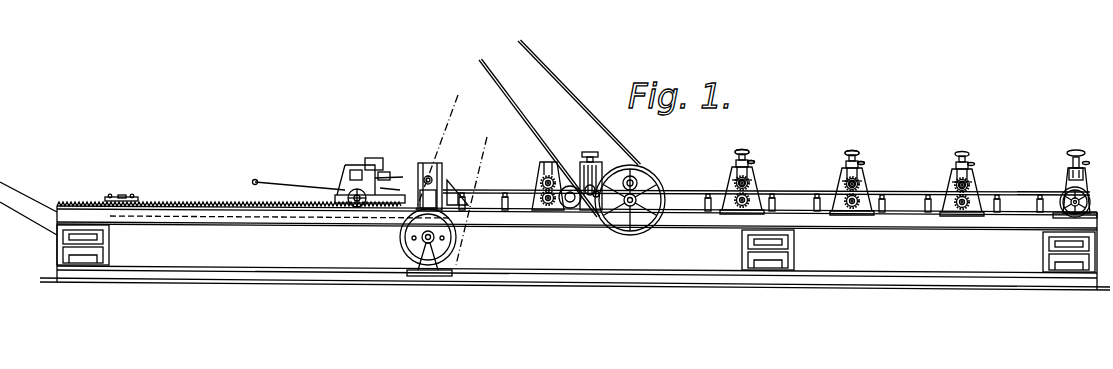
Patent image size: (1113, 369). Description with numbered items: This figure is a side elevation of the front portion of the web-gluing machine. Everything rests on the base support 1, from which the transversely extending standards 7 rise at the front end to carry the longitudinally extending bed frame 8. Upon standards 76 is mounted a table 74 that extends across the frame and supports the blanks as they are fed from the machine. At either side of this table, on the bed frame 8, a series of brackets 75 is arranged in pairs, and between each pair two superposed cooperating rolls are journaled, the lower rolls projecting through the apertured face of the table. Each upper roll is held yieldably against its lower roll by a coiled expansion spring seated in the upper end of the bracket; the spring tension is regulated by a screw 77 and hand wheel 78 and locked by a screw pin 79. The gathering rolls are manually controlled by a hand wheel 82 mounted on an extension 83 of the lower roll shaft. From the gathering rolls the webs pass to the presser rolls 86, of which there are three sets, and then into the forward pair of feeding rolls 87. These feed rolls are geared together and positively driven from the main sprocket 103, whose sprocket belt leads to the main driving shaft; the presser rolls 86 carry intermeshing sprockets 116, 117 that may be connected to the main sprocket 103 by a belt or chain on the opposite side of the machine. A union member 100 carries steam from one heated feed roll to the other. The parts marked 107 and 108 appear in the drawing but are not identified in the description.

The base support 1 is at (575, 248).
The standards 7 is at (110, 243).
The bed frame 8 is at (223, 221).
The table 74 is at (766, 185).
The brackets 75 is at (756, 188).
The standards 76 is at (501, 203).
The screw 77 is at (737, 165).
The hand wheel 78 is at (746, 151).
The screw pin 79 is at (755, 162).
The hand wheel 82 is at (1066, 186).
The shaft extension 83 is at (1063, 215).
The presser rolls 86 is at (732, 181).
The forward pair of feeding rolls 87 is at (655, 172).
The union member 100 is at (540, 203).
The main sprocket 103 is at (629, 236).
The standard 107 is at (433, 168).
The carriage 108 is at (362, 166).
The sprocket 116 is at (733, 176).
The sprocket 117 is at (739, 206).